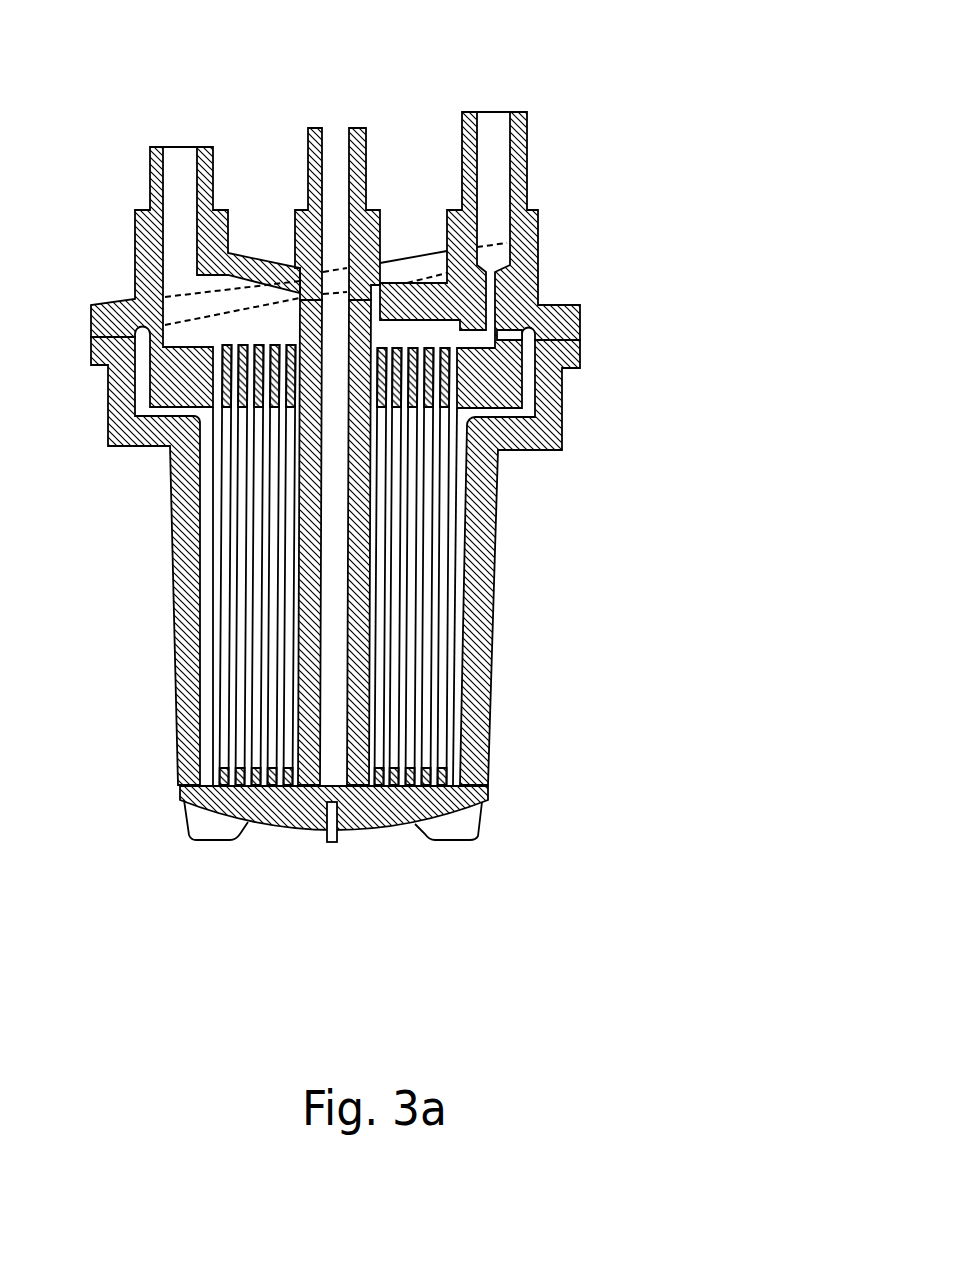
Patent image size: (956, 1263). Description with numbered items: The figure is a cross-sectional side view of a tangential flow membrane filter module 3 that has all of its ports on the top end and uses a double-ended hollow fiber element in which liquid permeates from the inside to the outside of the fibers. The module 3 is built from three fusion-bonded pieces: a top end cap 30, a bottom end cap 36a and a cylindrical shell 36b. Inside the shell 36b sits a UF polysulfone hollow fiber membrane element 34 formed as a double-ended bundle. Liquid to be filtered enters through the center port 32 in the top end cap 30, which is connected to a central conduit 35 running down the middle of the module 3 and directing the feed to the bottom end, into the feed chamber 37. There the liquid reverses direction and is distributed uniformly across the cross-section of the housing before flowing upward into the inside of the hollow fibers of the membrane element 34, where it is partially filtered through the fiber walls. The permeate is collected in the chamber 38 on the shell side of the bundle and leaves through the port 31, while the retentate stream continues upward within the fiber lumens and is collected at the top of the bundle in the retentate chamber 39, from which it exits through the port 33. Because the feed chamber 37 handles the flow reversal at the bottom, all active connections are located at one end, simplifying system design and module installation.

The module 3 is at (542, 553).
The top end cap 30 is at (558, 273).
The port 31 is at (470, 107).
The center port 32 is at (310, 125).
The port 33 is at (150, 143).
The hollow fiber membrane element 34 is at (250, 563).
The central conduit 35 is at (298, 692).
The bottom end cap 36a is at (393, 828).
The cylindrical shell 36b is at (482, 685).
The feed chamber 37 is at (370, 809).
The chamber 38 is at (586, 379).
The retentate chamber 39 is at (549, 312).